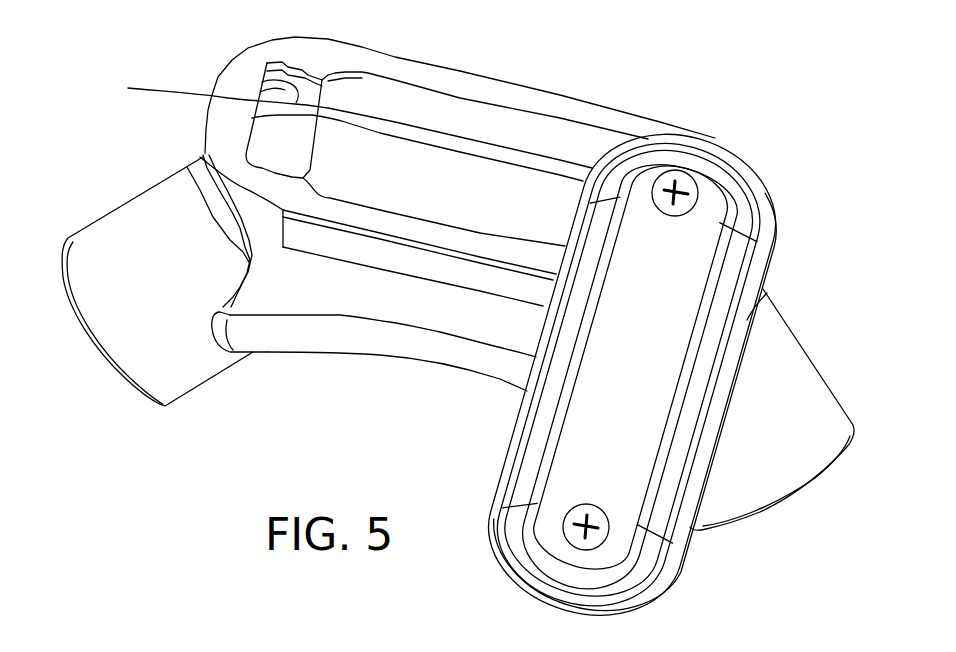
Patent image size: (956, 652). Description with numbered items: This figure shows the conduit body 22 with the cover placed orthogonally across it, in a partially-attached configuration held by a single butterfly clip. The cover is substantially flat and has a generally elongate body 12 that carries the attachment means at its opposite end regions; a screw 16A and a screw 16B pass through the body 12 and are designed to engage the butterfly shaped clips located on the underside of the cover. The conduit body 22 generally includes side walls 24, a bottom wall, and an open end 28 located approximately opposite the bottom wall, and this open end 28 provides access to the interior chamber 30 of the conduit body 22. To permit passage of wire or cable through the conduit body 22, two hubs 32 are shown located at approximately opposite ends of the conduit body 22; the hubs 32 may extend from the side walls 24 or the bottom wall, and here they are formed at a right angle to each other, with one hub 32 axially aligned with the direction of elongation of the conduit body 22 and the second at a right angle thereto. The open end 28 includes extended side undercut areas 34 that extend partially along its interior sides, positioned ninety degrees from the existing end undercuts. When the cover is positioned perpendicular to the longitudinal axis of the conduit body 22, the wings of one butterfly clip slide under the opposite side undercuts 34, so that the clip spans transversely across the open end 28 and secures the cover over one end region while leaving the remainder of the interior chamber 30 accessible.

The elongate body 12 is at (677, 300).
The screw 16A is at (694, 183).
The screw 16B is at (597, 540).
The conduit body 22 is at (580, 98).
The side walls 24 is at (289, 300).
The open end 28 is at (423, 167).
The interior chamber 30 is at (435, 203).
The hubs 32 is at (93, 352).
The side undercuts 34 is at (190, 163).